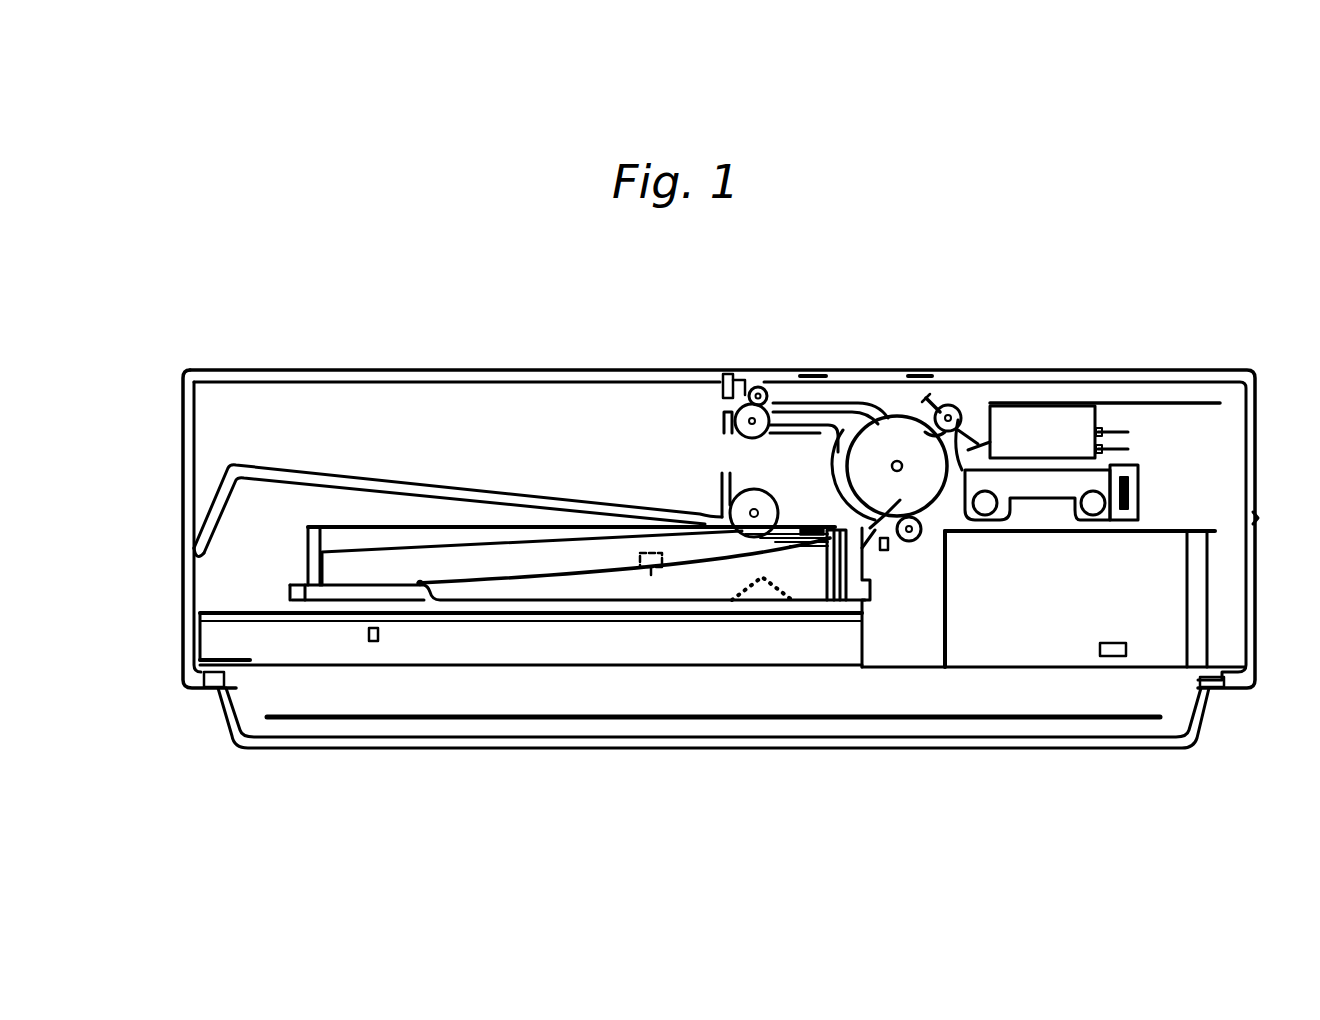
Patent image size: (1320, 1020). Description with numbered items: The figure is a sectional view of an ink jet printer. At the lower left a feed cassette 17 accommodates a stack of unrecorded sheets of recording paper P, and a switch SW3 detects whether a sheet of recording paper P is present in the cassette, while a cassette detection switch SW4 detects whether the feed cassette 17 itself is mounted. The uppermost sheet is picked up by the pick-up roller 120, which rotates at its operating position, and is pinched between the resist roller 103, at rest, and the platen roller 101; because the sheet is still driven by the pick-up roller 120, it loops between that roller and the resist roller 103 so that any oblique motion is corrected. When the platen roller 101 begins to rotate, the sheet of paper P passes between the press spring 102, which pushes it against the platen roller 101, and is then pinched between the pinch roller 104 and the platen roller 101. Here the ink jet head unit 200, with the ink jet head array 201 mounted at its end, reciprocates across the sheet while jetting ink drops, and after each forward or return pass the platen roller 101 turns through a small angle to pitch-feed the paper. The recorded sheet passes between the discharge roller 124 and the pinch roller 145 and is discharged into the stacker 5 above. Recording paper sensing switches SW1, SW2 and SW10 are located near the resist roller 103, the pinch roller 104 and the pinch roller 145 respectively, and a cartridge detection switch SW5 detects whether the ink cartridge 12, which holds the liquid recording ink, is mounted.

The stacker 5 is at (401, 368).
The ink cartridge 12 is at (1160, 640).
The feed cassette 17 is at (519, 606).
The platen roller 101 is at (895, 440).
The press spring 102 is at (966, 528).
The resist roller 103 is at (920, 545).
The pinch roller 104 is at (962, 414).
The pick-up roller 120 is at (772, 494).
The discharge roller 124 is at (735, 425).
The pinch roller 145 is at (764, 386).
The ink jet head unit 200 is at (1080, 410).
The ink jet head array 201 is at (1012, 443).
The recording paper sensing switch SW1 is at (886, 552).
The recording paper sensing switch SW2 is at (932, 394).
The paper presence switch SW3 is at (373, 645).
The cassette detection switch SW4 is at (651, 575).
The cartridge detection switch SW5 is at (1110, 658).
The recording paper sensing switch SW10 is at (740, 383).
The sheet of recording paper P is at (793, 535).